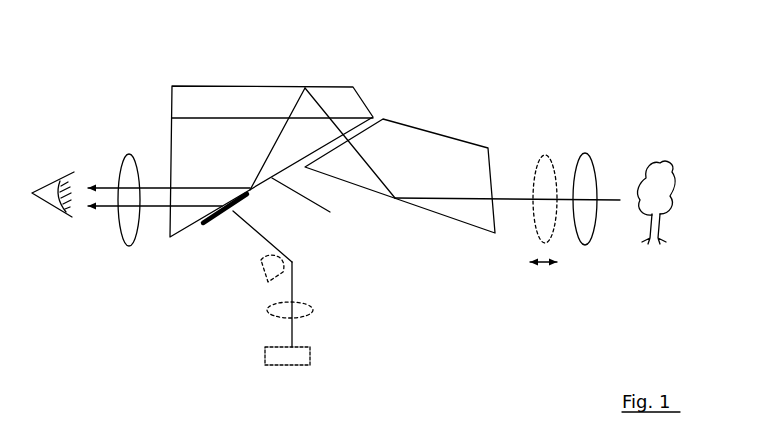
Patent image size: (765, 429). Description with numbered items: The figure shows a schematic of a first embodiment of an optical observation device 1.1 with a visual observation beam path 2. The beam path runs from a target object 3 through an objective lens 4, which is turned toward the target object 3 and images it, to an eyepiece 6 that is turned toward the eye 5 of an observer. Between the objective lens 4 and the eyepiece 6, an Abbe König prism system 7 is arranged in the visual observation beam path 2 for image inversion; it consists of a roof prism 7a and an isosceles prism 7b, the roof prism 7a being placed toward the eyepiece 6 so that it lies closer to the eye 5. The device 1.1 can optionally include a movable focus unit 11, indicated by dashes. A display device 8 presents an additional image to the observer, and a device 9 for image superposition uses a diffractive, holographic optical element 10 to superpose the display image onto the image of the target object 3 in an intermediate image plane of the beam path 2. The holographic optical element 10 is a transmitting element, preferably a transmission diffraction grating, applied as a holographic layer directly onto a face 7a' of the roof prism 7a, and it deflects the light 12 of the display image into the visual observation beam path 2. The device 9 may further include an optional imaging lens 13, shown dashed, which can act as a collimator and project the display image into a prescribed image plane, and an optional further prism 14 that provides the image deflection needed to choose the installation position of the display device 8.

The optical observation device 1.1 is at (597, 89).
The visual observation beam path 2 is at (453, 198).
The target object 3 is at (662, 152).
The objective lens 4 is at (585, 245).
The eye 5 is at (52, 165).
The eyepiece 6 is at (128, 163).
The Abbe König prism system 7 is at (332, 129).
The roof prism 7a is at (271, 129).
The isosceles prism 7b is at (427, 150).
The face of the roof prism 7a' is at (326, 216).
The display device 8 is at (293, 355).
The device for image superposition 9 is at (248, 288).
The holographic optical element 10 is at (200, 228).
The movable focus unit 11 is at (545, 155).
The light to be superposed 12 is at (240, 225).
The imaging lens 13 is at (302, 312).
The further prism 14 is at (295, 258).